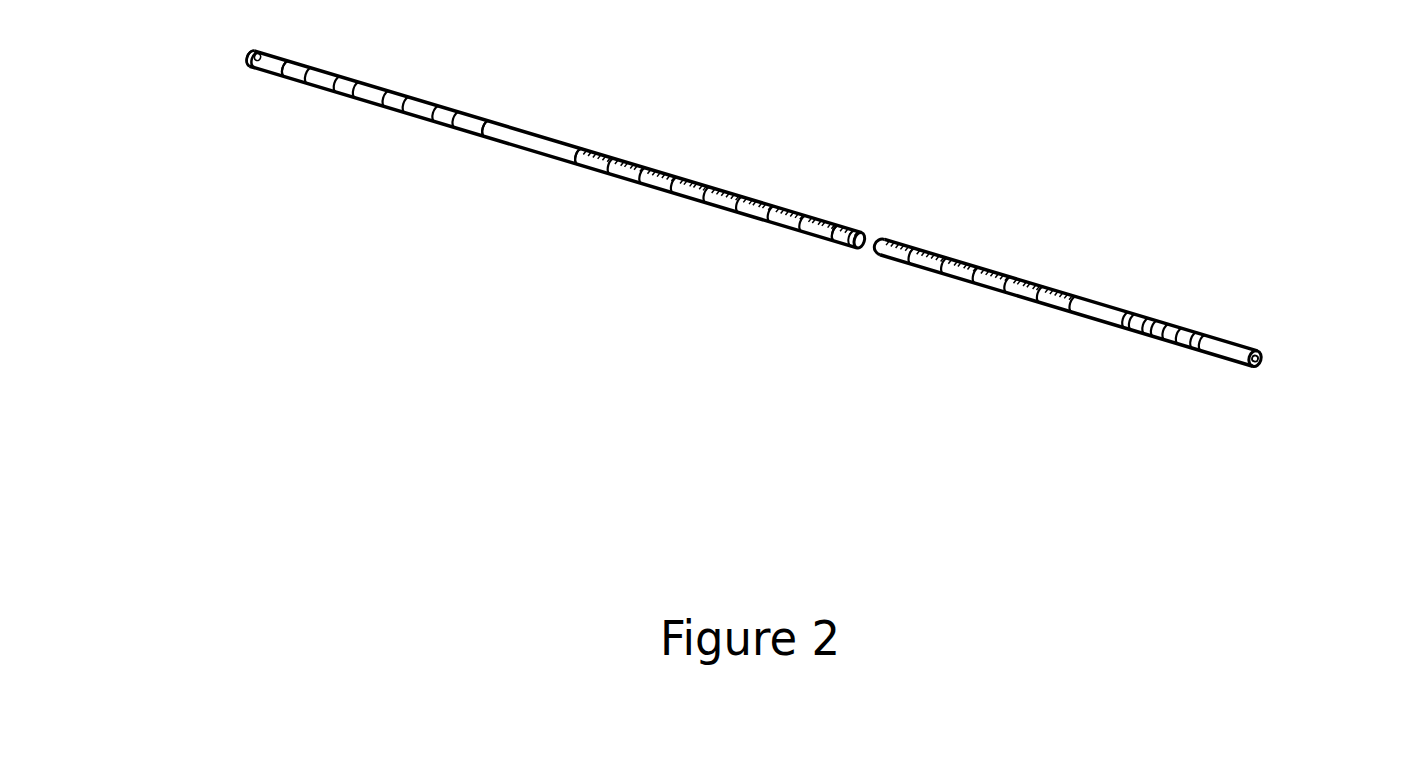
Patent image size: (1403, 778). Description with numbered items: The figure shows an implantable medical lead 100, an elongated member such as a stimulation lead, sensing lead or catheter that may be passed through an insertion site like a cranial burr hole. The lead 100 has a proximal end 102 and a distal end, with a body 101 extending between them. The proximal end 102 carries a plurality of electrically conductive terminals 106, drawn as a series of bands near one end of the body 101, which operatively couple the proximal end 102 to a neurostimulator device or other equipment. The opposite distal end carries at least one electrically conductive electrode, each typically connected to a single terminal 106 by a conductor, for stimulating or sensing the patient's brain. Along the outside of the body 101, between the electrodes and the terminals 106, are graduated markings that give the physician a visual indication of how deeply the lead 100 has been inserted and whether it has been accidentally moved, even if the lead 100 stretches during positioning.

The implantable medical lead 100 is at (753, 82).
The body 101 is at (1119, 331).
The proximal end 102 is at (1258, 348).
The electrically conductive terminals 106 is at (1132, 333).